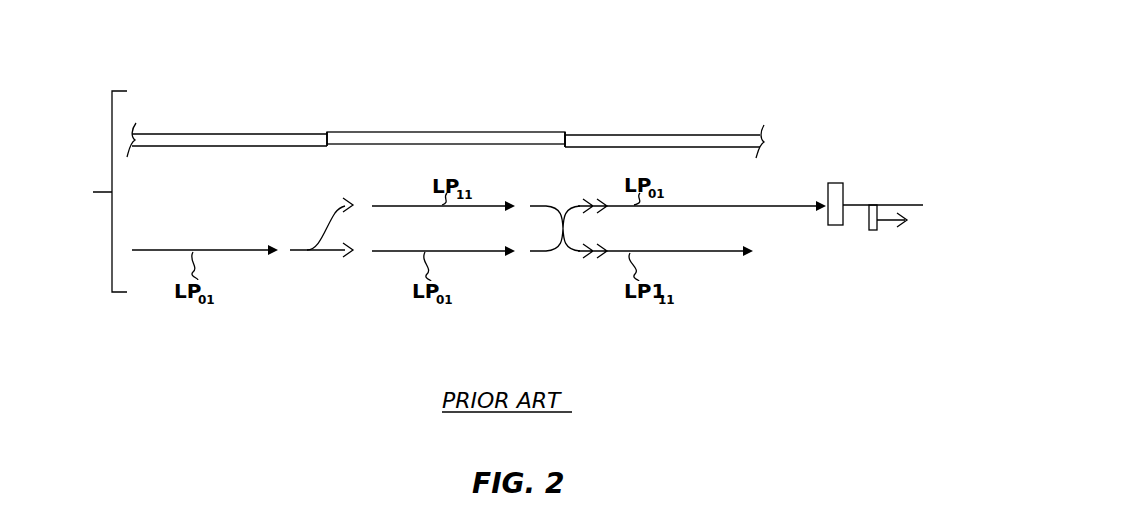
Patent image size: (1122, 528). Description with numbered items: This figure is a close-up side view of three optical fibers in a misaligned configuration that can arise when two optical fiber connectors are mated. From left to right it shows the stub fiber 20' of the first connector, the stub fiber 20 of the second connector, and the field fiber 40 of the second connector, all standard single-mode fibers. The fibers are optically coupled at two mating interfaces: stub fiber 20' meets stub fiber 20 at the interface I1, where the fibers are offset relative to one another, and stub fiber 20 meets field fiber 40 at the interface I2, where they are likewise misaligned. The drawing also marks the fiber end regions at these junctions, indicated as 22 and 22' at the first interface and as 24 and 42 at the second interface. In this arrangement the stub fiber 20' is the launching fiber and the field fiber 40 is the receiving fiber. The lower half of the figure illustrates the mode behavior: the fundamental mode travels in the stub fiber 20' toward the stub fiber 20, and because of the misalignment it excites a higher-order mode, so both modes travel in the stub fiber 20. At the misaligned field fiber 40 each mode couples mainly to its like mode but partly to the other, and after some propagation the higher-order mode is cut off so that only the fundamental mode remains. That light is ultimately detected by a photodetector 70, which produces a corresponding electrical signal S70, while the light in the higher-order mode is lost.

The stub fiber 20' is at (227, 114).
The stub fiber 20 is at (446, 105).
The field fiber 40 is at (677, 136).
The end face of fiber 20 22 is at (348, 118).
The end face of fiber 20' 22' is at (314, 166).
The output end face of fiber 20 24 is at (565, 132).
The input end face of fiber 40 42 is at (565, 147).
The interface I1 is at (325, 104).
The interface I2 is at (570, 116).
The photodetector 70 is at (833, 228).
The electrical signal S70 is at (867, 228).